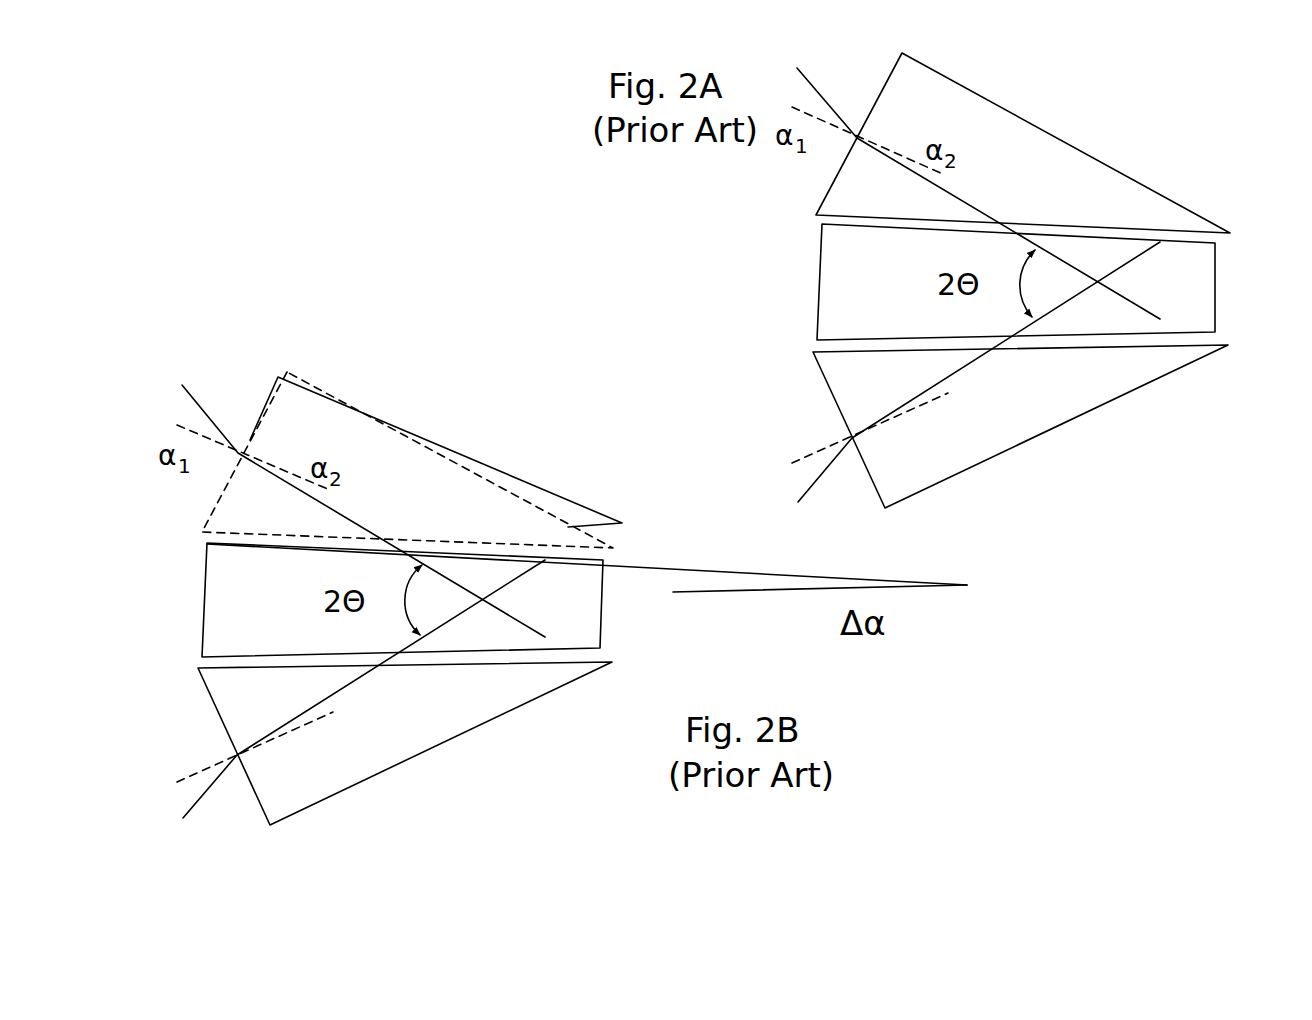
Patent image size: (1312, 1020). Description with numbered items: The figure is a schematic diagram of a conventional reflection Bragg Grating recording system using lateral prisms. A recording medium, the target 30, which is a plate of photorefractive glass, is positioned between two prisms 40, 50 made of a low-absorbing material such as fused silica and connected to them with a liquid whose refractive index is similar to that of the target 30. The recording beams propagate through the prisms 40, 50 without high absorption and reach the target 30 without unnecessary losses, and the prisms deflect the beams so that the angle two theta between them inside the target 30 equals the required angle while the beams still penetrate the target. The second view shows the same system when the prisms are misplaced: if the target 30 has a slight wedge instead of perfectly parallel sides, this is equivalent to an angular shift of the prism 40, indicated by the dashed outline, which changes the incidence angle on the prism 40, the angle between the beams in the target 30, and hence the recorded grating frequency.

In FIG. 2A, the target 30 is at (1200, 292).
In FIG. 2B, the target 30 is at (588, 620).
In FIG. 2A, the prism 40 is at (970, 120).
In FIG. 2B, the prism 40 is at (335, 395).
In FIG. 2A, the prism 50 is at (1093, 390).
In FIG. 2B, the prism 50 is at (518, 685).